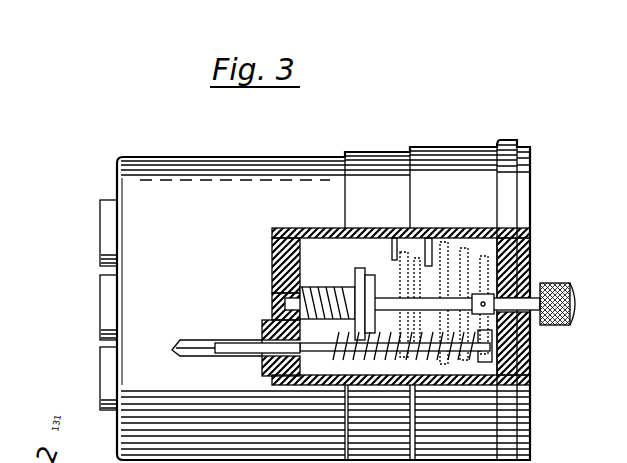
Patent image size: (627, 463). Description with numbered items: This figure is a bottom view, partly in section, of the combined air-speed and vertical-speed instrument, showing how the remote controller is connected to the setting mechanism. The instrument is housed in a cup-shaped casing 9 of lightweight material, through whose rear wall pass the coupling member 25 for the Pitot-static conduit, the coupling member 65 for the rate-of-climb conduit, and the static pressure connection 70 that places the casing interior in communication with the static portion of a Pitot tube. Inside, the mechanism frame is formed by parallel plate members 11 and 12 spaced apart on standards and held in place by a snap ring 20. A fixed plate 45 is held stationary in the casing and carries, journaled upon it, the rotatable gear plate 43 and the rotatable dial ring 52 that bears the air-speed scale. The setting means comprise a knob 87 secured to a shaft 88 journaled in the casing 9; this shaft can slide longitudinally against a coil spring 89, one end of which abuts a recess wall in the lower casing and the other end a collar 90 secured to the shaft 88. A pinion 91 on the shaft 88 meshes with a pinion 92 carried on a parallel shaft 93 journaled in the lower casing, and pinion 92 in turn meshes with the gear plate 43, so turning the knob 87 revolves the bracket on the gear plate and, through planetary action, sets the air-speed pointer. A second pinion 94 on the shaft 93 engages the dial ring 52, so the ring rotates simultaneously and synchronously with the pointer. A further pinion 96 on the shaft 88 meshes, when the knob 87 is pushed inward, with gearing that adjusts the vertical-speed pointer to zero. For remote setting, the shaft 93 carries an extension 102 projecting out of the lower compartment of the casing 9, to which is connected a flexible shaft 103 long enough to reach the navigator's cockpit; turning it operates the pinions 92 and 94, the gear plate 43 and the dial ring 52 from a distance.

The instrument casing 9 is at (449, 147).
The plate member 12 is at (368, 228).
The plate member 11 is at (395, 228).
The snap ring 20 is at (426, 228).
The gear plate 43 is at (468, 228).
The fixed plate 45 is at (482, 228).
The dial ring 52 is at (515, 228).
The knob 87 is at (578, 296).
The pinion 94 is at (490, 357).
The shaft 93 is at (385, 358).
The pinion 92 is at (467, 368).
The pinion 91 is at (460, 300).
The pinion 96 is at (414, 305).
The shaft 88 is at (423, 298).
The coil spring 89 is at (338, 285).
The collar 90 is at (359, 290).
The flexible shaft 103 is at (195, 338).
The extension 102 is at (236, 340).
The connection 70 is at (98, 236).
The coupling member 65 is at (98, 299).
The coupling member 25 is at (98, 375).